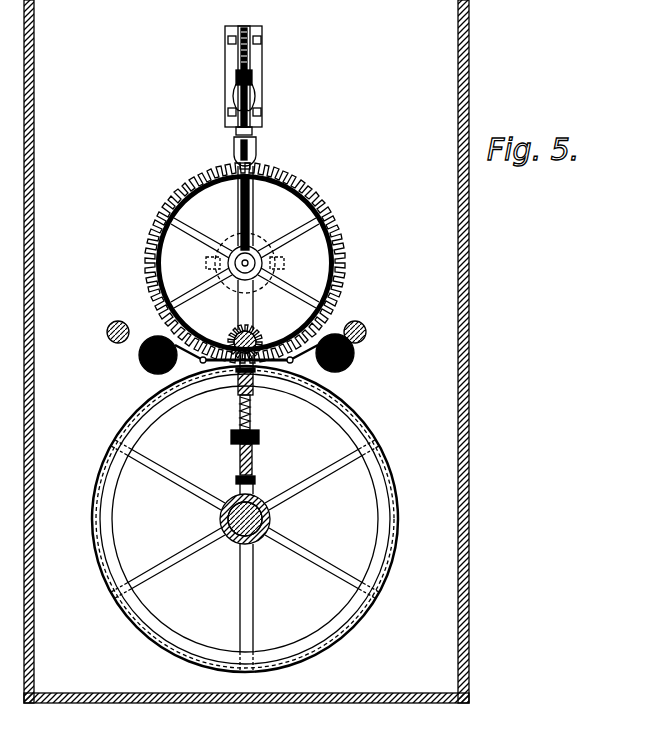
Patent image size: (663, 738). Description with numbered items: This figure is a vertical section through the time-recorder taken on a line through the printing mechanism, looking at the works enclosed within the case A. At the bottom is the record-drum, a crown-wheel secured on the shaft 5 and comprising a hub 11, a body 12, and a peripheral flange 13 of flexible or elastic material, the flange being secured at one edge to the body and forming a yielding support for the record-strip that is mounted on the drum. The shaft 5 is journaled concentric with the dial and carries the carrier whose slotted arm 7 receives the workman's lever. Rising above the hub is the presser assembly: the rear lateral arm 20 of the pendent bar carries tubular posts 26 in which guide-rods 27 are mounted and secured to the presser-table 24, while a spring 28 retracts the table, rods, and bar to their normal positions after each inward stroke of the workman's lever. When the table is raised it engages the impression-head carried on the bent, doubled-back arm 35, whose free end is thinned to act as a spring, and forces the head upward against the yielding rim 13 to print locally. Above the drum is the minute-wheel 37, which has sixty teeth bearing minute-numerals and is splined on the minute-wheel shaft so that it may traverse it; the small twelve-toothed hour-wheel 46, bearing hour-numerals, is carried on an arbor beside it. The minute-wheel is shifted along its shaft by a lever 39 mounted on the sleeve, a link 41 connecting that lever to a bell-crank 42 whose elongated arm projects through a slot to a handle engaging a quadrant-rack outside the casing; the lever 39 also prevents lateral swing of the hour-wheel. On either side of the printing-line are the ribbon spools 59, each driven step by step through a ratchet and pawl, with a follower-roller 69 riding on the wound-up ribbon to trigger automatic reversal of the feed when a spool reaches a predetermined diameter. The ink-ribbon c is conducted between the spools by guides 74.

The case A is at (257, 351).
The bell-crank 42 is at (250, 100).
The link 41 is at (253, 133).
The lever 39 is at (256, 152).
The minute-wheel 37 is at (257, 263).
The slotted arm 7 is at (245, 253).
The hour-wheel 46 is at (257, 335).
The follower-roller 69 is at (242, 323).
The spool 59 is at (247, 355).
The guides 74 is at (246, 351).
The ribbon c is at (304, 364).
The peripheral flange 13 is at (245, 519).
The body 12 is at (245, 556).
The hub 11 is at (221, 519).
The shaft 5 is at (270, 519).
The arm 35 is at (230, 379).
The presser-table 24 is at (252, 402).
The spring 28 is at (252, 419).
The guide-rods 27 is at (259, 449).
The tubular posts 26 is at (261, 462).
The rear lateral arm 20 is at (236, 480).